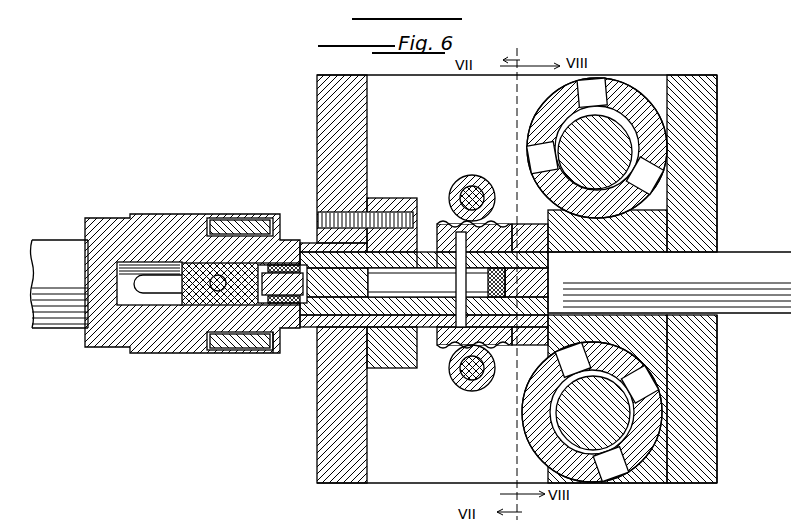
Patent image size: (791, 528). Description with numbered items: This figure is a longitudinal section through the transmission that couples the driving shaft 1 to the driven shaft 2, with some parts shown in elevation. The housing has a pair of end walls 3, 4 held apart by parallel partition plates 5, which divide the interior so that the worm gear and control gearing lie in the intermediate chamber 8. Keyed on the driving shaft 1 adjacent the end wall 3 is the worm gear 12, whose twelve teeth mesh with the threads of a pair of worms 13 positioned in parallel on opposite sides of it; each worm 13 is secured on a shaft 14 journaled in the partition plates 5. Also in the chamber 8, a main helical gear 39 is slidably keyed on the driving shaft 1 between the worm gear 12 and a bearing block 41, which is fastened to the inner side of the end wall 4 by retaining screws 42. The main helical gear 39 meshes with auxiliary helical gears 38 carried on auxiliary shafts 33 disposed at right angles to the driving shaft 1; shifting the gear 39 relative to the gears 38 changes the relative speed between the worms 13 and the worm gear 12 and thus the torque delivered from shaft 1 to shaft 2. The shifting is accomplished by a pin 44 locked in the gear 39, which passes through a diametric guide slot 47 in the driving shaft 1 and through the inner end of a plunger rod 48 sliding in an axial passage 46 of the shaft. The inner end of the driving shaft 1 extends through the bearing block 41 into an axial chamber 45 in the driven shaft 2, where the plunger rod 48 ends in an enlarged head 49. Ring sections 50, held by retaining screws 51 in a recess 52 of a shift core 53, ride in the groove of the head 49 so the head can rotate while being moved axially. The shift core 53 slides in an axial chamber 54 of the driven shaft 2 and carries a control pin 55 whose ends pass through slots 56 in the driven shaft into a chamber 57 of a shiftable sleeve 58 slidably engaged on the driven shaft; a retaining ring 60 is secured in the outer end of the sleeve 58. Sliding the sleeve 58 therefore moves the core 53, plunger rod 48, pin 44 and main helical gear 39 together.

The driving shaft 1 is at (730, 262).
The driven shaft 2 is at (50, 240).
The housing end wall 3 is at (695, 447).
The housing end wall 4 is at (317, 458).
The partition plate 5 is at (390, 470).
The intermediate chamber 8 is at (367, 88).
The worm gear 12 is at (630, 240).
The worm 13 is at (615, 115).
The worm shaft 14 is at (610, 140).
The auxiliary helical gear supporting shaft 33 is at (480, 176).
The auxiliary helical gear 38 is at (455, 185).
The main helical gear 39 is at (500, 226).
The bearing block 41 is at (385, 358).
The retaining screw 42 is at (400, 215).
The pin 44 is at (500, 335).
The axial chamber 45 is at (305, 322).
The axial passage 46 is at (508, 283).
The diametric guide slot 47 is at (435, 250).
The plunger rod 48 is at (436, 282).
The plunger head 49 is at (310, 245).
The ring section 50 is at (300, 265).
The retaining screw 51 is at (270, 264).
The recess 52 is at (190, 340).
The shift core 53 is at (186, 218).
The axial chamber 54 is at (140, 216).
The control pin 55 is at (219, 274).
The slot 56 is at (125, 340).
The chamber 57 is at (216, 350).
The shiftable sleeve 58 is at (152, 290).
The retaining ring 60 is at (258, 340).